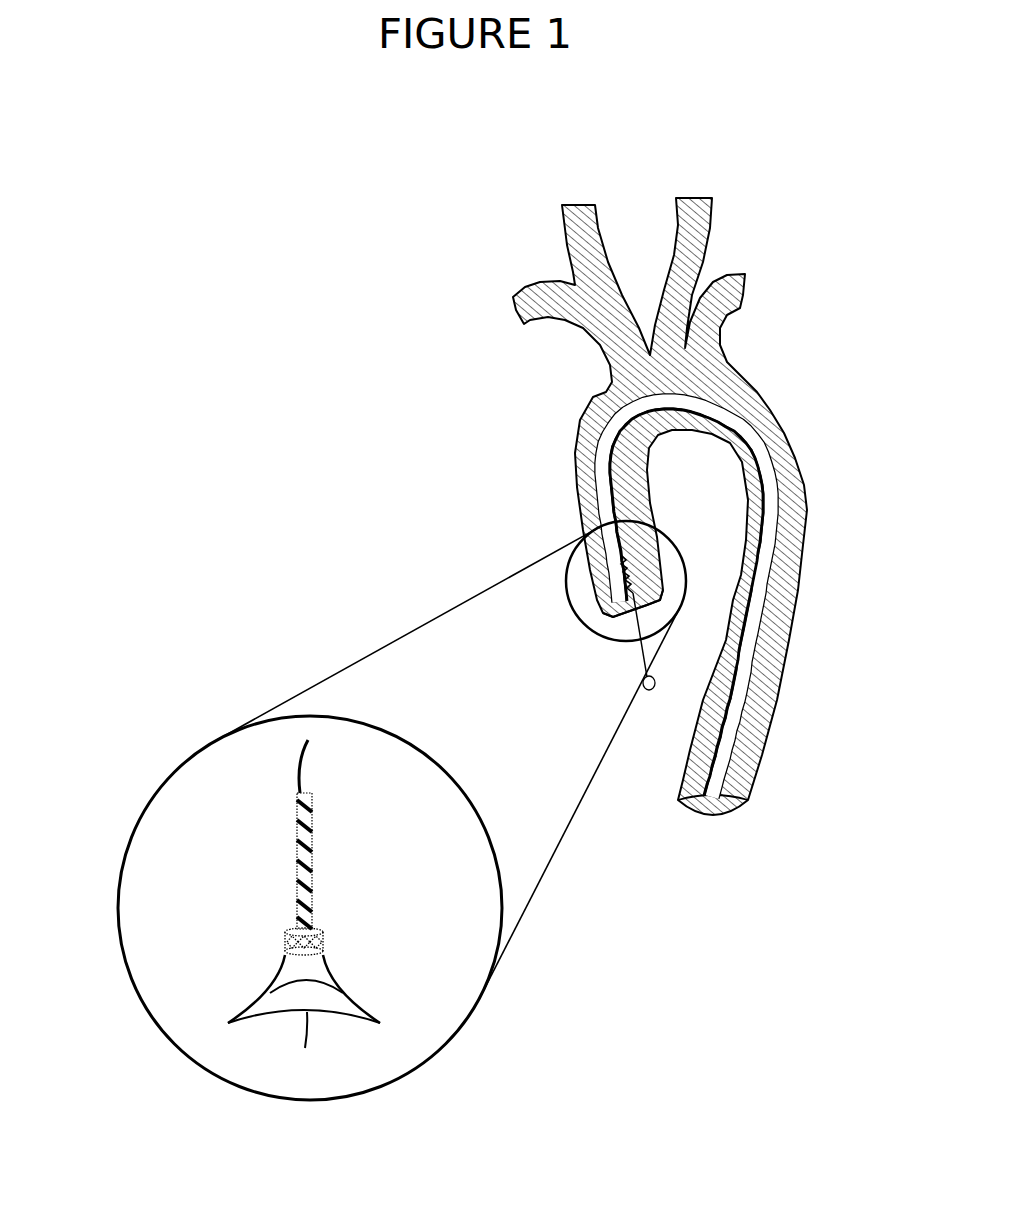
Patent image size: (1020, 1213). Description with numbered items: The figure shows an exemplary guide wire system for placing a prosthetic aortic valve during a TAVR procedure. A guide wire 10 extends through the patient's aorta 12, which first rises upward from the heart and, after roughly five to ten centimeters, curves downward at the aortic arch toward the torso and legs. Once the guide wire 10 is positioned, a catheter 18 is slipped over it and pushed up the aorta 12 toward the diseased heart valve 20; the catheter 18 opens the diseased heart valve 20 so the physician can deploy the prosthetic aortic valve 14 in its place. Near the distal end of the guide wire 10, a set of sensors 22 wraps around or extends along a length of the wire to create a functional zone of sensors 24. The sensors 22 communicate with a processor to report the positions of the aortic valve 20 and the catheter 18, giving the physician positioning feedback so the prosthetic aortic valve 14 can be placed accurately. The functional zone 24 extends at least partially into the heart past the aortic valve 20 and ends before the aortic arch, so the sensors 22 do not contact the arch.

The guide wire 10 is at (651, 690).
The aorta 12 is at (610, 368).
The prosthetic aortic valve 14 is at (323, 942).
The catheter 18 is at (606, 452).
The diseased heart valve 20 is at (628, 596).
The sensors 22 is at (621, 557).
The functional zone of sensors 24 is at (298, 838).